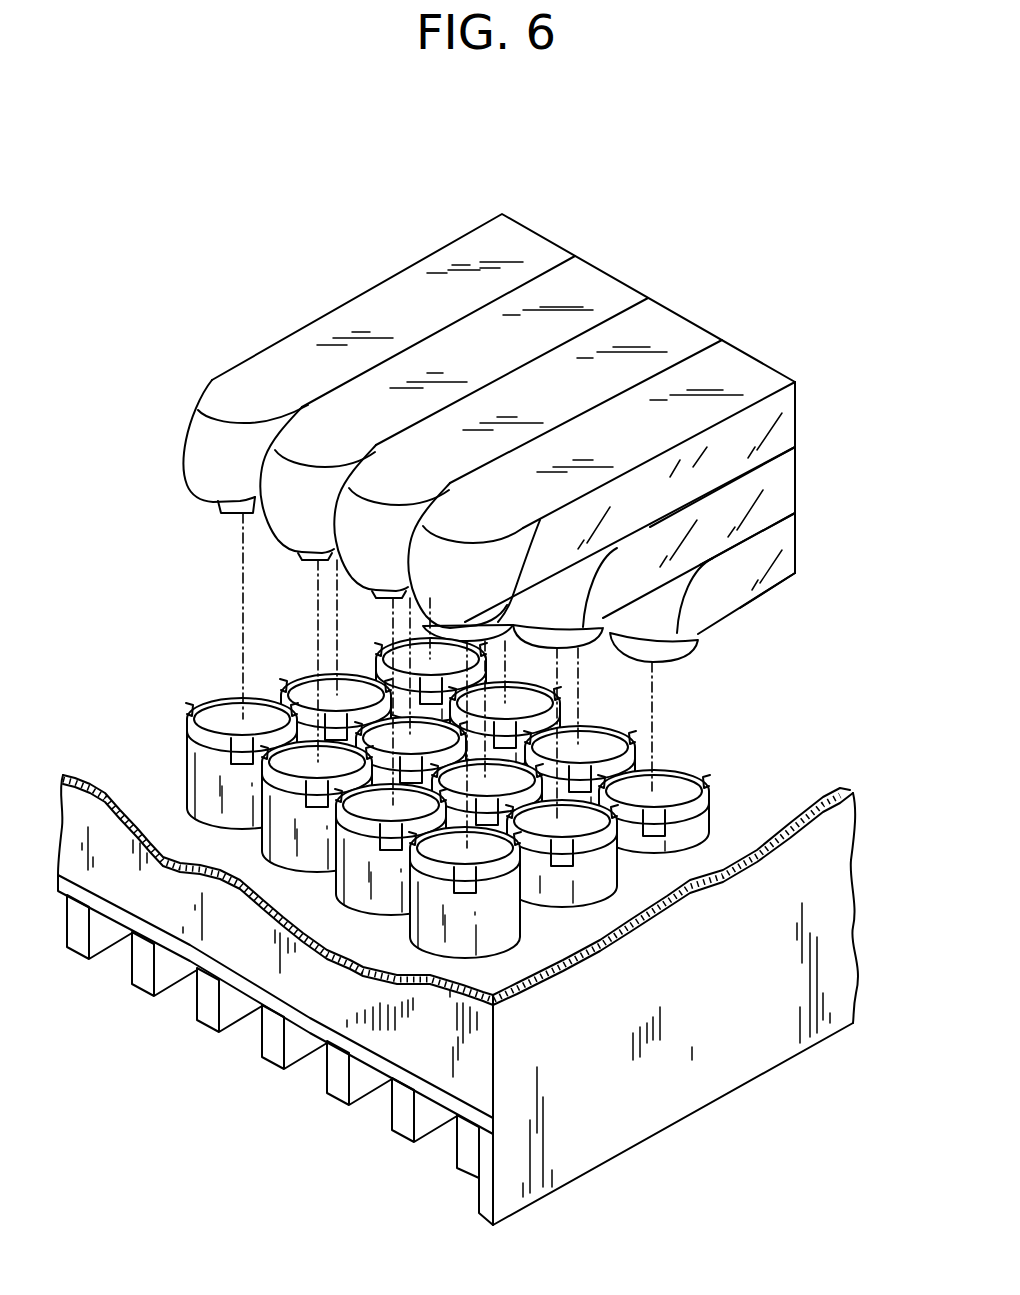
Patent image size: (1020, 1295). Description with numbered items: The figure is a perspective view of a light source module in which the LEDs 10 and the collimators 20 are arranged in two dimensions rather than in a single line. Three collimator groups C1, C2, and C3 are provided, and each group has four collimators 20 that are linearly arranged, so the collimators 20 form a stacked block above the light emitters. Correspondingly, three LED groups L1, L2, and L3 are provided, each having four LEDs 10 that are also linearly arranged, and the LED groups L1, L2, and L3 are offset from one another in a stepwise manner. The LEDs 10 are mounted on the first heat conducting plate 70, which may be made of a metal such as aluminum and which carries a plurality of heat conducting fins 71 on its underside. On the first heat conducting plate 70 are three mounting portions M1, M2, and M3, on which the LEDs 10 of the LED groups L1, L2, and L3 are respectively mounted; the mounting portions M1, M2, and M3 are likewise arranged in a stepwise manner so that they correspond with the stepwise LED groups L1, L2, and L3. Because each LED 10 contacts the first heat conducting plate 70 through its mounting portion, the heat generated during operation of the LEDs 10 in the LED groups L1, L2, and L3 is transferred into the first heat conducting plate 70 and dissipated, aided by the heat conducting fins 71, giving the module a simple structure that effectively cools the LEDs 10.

The LED 10 is at (225, 513).
The collimator 20 is at (196, 435).
The collimator group C1 is at (797, 412).
The collimator group C2 is at (797, 478).
The collimator group C3 is at (797, 540).
The LED group L1 is at (305, 558).
The LED group L2 is at (583, 652).
The LED group L3 is at (675, 665).
The mounting portion M1 is at (512, 932).
The mounting portion M2 is at (592, 888).
The mounting portion M3 is at (683, 835).
The first heat conducting plate 70 is at (331, 1039).
The heat conducting fin 71 is at (350, 1097).